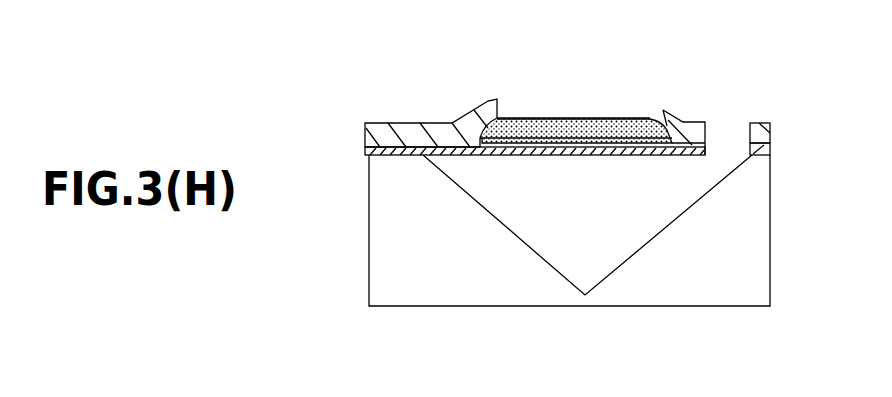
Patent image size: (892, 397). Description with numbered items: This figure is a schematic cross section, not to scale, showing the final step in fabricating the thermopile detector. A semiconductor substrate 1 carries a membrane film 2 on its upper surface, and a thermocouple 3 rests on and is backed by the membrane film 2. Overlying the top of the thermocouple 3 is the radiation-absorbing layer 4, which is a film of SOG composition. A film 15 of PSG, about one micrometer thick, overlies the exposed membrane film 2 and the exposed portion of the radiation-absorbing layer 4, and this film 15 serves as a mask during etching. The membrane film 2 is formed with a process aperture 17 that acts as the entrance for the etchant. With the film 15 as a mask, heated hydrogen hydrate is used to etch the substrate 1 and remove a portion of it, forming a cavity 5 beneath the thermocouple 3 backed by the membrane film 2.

The semiconductor substrate 1 is at (771, 237).
The membrane film 2 is at (365, 151).
The thermocouple 3 is at (611, 117).
The radiation-absorbing layer 4 is at (542, 118).
The cavity 5 is at (670, 223).
The film of PSG 15 is at (683, 121).
The process aperture 17 is at (738, 126).